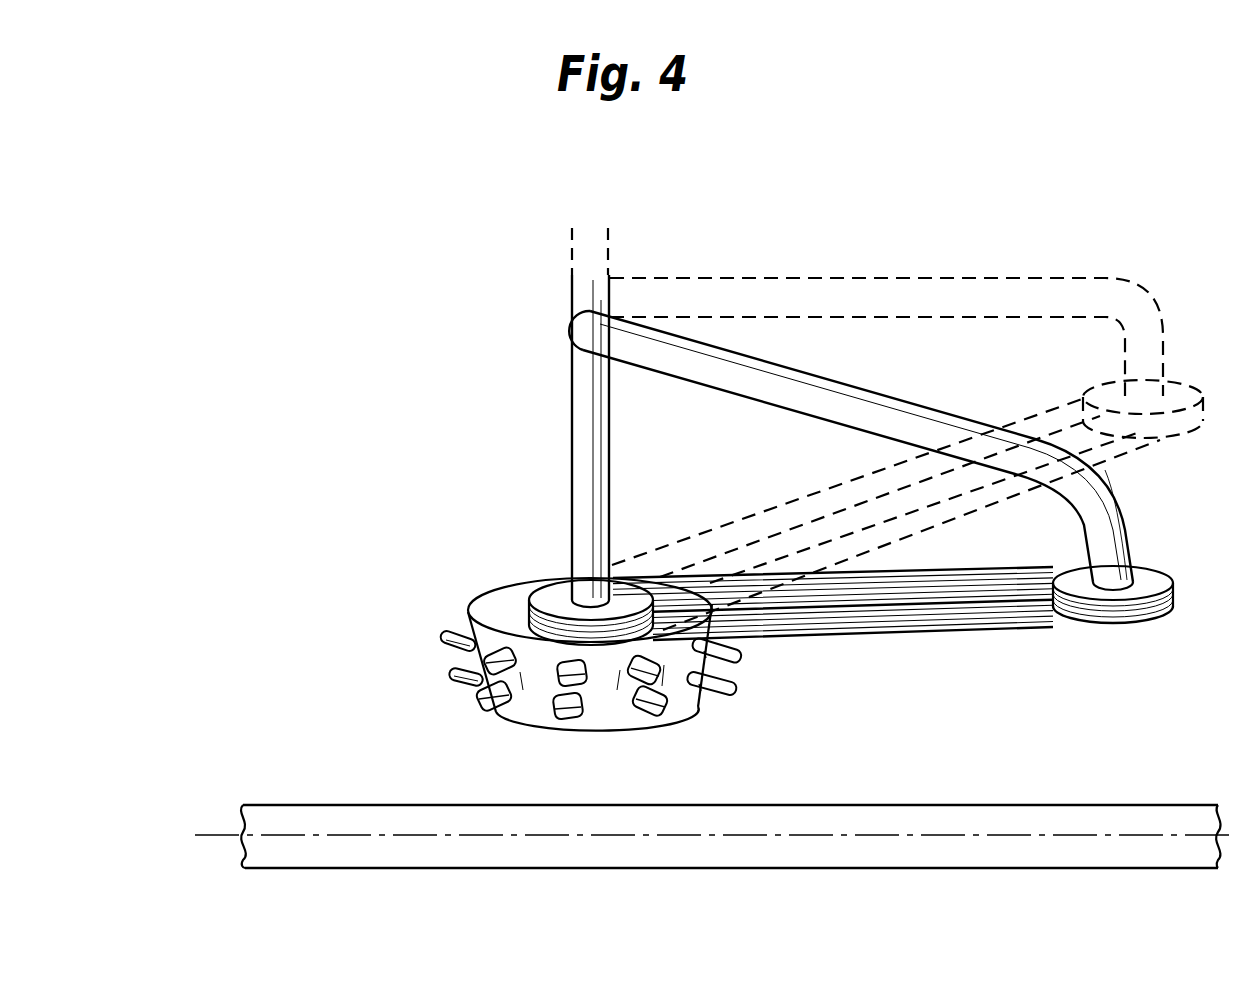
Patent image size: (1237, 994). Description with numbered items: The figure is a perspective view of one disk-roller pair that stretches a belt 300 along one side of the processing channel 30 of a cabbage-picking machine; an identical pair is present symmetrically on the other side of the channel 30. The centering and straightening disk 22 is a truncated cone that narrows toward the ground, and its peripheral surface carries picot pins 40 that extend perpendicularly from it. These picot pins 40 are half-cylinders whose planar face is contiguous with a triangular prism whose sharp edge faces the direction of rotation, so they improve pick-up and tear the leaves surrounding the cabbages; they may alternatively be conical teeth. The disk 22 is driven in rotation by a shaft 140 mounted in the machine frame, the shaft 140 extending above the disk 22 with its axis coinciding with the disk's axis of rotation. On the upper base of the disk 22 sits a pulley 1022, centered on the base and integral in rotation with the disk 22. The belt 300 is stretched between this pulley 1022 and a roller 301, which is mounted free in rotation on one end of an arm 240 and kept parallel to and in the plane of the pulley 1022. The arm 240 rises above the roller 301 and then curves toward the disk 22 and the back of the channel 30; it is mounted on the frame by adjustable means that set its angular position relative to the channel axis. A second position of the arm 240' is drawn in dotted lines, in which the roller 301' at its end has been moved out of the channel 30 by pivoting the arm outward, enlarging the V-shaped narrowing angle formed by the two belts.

The processing channel 30 is at (232, 820).
The centering and straightening disk 22 is at (490, 608).
The picot pins 40 is at (476, 677).
The pulley 1022 is at (545, 583).
The shaft 140 is at (578, 452).
The belt 300 is at (918, 622).
The roller 301 is at (1106, 633).
The arm 240 is at (851, 450).
The arm in other position 240' is at (886, 294).
The roller in other position 301' is at (913, 505).